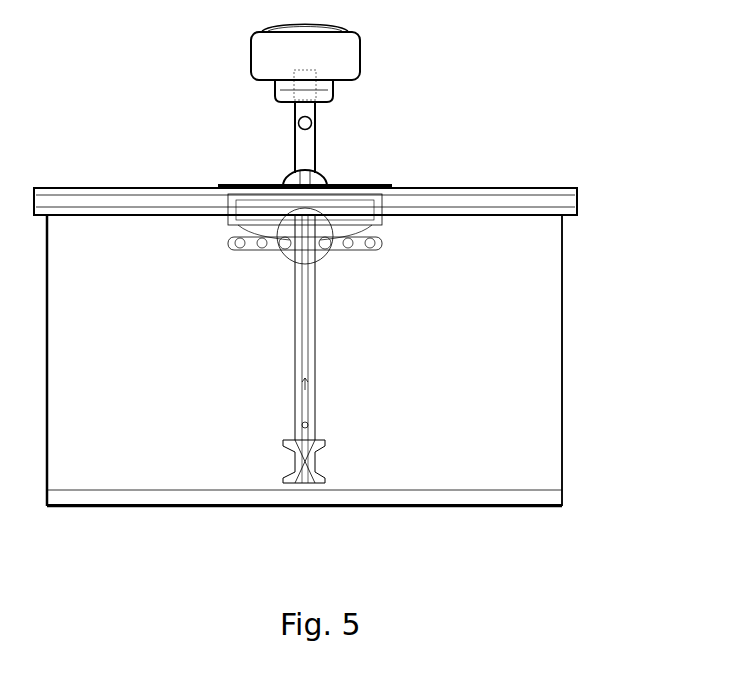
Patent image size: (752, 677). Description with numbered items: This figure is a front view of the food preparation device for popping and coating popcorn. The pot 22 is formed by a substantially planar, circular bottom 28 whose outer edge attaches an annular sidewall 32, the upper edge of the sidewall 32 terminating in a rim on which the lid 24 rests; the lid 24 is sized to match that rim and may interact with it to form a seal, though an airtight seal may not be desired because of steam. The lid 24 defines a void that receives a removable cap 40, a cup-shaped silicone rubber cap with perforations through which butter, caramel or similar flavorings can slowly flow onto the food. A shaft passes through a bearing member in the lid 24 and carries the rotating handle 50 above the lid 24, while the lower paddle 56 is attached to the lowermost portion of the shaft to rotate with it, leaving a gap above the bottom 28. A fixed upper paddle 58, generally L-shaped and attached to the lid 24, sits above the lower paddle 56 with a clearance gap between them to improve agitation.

The pot 22 is at (563, 467).
The lid 24 is at (560, 193).
The bottom 28 is at (455, 507).
The annular sidewall 32 is at (563, 341).
The removable cap 40 is at (318, 173).
The rotating handle 50 is at (360, 55).
The lower paddle 56 is at (318, 466).
The upper paddle 58 is at (305, 338).